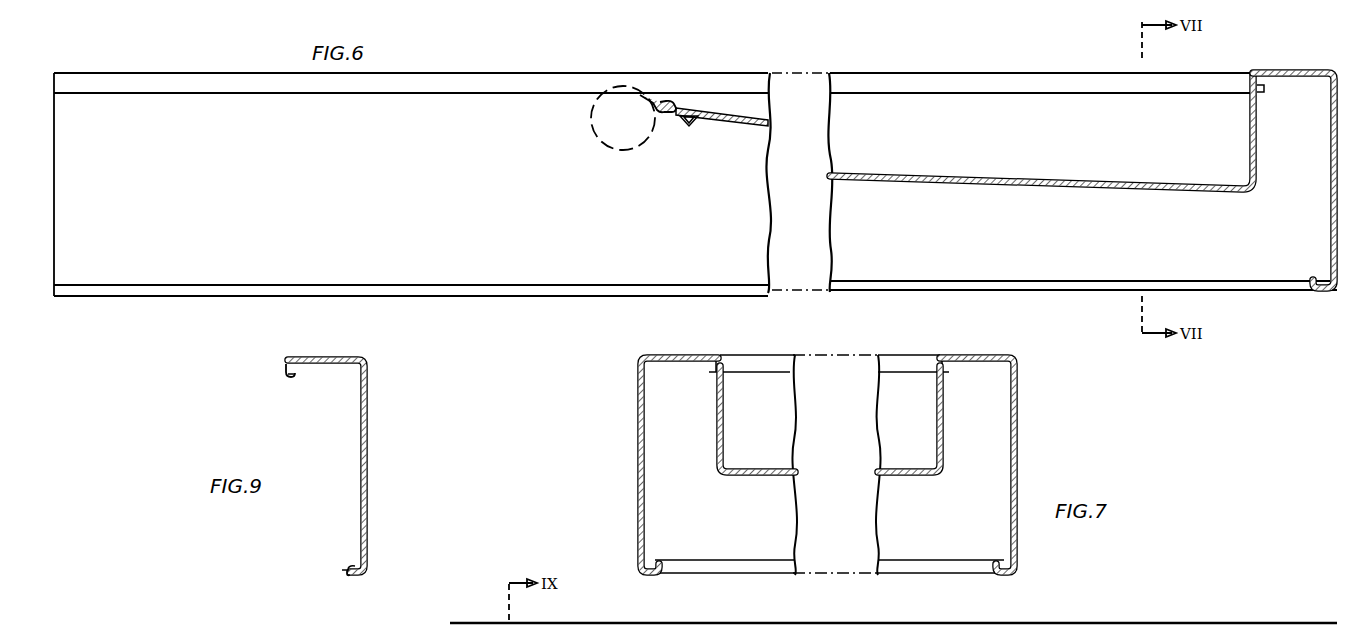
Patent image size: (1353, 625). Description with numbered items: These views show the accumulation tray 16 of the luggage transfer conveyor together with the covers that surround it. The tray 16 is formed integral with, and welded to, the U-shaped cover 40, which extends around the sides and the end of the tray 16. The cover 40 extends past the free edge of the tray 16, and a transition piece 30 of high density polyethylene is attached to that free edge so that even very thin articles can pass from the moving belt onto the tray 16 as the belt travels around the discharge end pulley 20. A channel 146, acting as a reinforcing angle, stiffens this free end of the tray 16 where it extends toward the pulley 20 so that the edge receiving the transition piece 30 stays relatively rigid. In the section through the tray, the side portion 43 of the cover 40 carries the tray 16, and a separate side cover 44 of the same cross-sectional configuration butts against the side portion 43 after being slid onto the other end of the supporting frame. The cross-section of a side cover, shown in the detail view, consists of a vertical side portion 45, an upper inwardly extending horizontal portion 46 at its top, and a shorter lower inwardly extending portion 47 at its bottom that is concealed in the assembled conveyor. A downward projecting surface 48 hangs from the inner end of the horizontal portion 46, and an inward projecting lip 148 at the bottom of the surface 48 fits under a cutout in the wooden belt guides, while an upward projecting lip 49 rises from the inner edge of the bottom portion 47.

In FIG. 6, the discharge end pulley 20 is at (595, 146).
In FIG. 6, the transition piece 30 is at (667, 100).
In FIG. 6, the channel 146 is at (692, 126).
In FIG. 7, the U-shaped cover 40 is at (846, 520).
In FIG. 7, the side portion 43 is at (638, 428).
In FIG. 7, the side cover 44 is at (1018, 437).
In FIG. 7, the accumulation tray 16 is at (945, 430).
In FIG. 9, the vertical side portion 45 is at (368, 447).
In FIG. 9, the upper inwardly extending horizontal portion 46 is at (333, 352).
In FIG. 9, the lower inwardly extending portion 47 is at (360, 576).
In FIG. 9, the downward projecting surface 48 is at (284, 370).
In FIG. 9, the inward projecting lip 148 is at (291, 379).
In FIG. 9, the upward projecting lip 49 is at (340, 569).